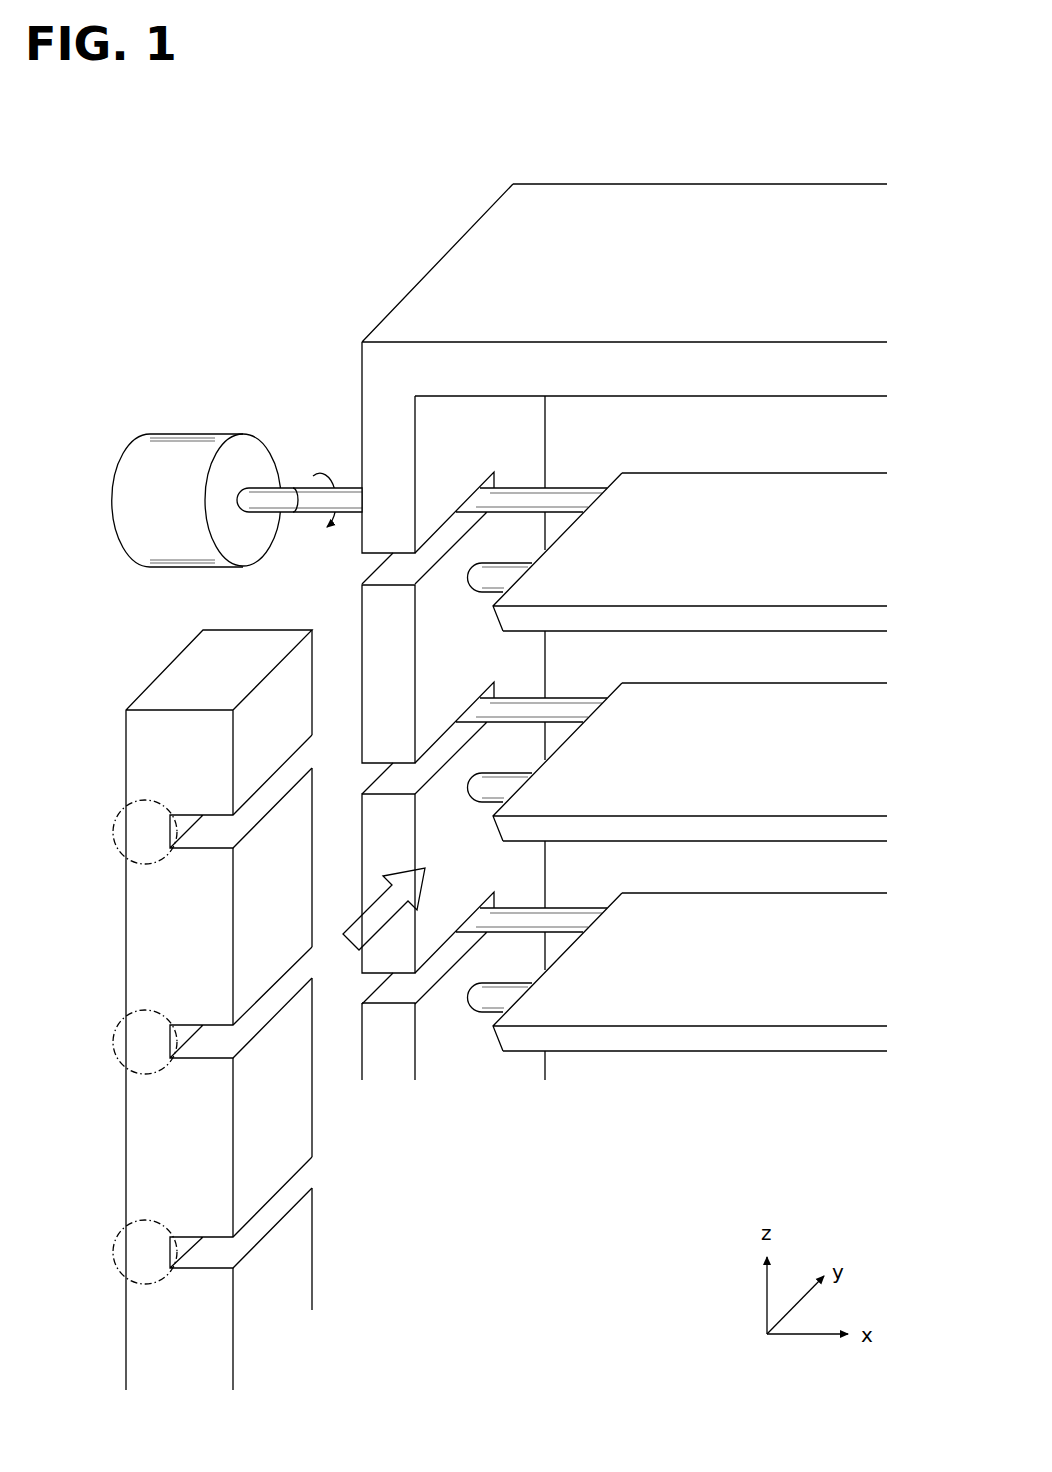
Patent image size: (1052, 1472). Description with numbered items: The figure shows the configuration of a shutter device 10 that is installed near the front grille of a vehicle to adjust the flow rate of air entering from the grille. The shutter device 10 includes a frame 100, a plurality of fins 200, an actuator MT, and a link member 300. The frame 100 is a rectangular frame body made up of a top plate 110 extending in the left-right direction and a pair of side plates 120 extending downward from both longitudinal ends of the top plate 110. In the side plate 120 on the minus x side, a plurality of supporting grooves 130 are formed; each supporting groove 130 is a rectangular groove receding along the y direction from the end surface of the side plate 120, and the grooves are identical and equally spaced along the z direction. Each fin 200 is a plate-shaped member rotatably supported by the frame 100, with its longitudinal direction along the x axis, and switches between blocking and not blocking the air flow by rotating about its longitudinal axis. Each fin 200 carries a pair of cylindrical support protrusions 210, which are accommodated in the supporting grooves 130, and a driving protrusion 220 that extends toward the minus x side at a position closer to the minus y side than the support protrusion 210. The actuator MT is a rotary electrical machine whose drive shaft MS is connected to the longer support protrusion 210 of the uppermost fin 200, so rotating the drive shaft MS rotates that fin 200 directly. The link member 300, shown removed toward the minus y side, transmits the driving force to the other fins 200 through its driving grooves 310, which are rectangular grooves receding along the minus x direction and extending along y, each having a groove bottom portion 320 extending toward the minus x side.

The shutter device 10 is at (378, 204).
The frame 100 is at (631, 179).
The top plate 110 is at (760, 207).
The side plate 120 is at (360, 412).
The supporting groove 130 is at (365, 566).
The fin 200 is at (763, 481).
The support protrusion 210 is at (567, 497).
The driving protrusion 220 is at (488, 580).
The link member 300 is at (223, 648).
The driving groove 310 is at (304, 755).
The groove bottom portion 320 is at (122, 855).
The actuator MT is at (172, 434).
The drive shaft MS is at (260, 497).